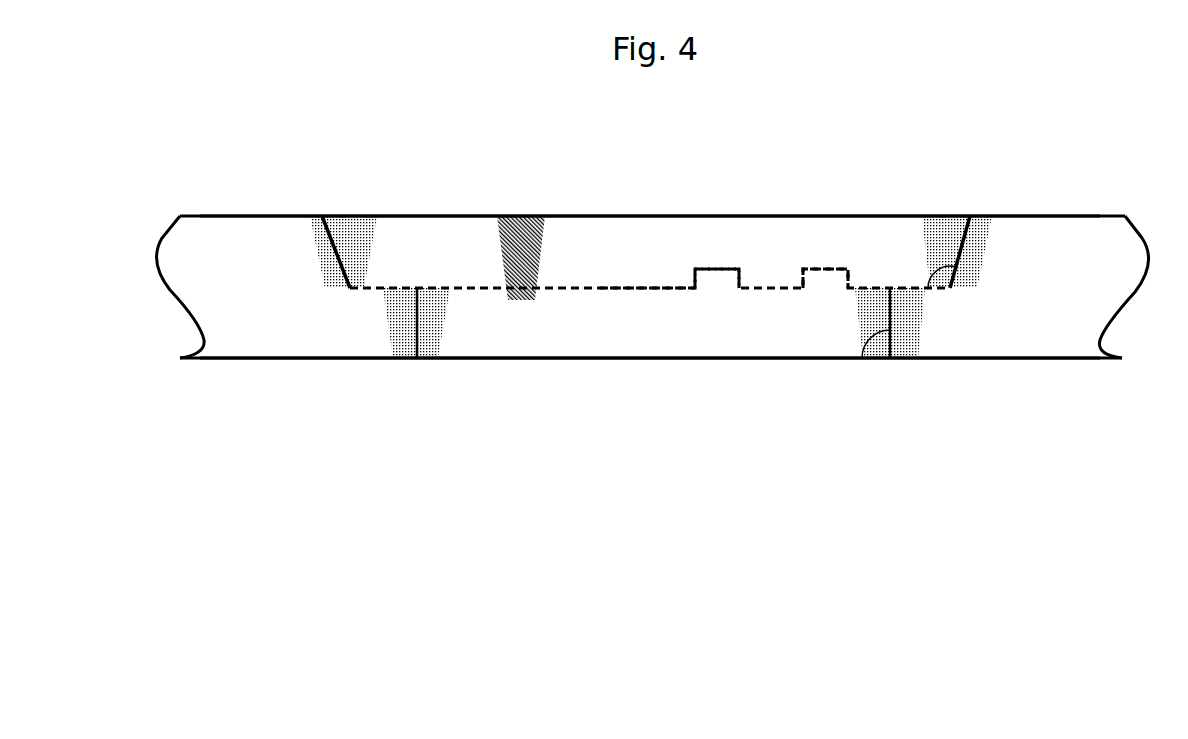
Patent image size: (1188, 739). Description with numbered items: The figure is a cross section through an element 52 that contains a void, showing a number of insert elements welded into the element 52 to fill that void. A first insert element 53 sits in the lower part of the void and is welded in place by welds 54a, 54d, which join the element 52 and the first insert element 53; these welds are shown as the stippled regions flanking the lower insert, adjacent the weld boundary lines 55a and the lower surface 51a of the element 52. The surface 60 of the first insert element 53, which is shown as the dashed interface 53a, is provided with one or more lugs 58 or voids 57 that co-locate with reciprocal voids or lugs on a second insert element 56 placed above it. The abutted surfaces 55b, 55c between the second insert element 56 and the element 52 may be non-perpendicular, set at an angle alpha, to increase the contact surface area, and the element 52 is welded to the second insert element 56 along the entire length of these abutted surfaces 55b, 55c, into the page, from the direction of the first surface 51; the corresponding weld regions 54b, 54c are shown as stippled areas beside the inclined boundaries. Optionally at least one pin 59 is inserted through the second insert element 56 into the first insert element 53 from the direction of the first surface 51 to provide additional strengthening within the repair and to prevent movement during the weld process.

The first surface 51 is at (235, 180).
The bottom surface of sole plate 51a is at (1032, 388).
The element 52 is at (1098, 240).
The first insert element 53 is at (695, 330).
The upper surface of lower layer 53a is at (567, 288).
The weld 54a is at (402, 325).
The upper left stippled insert region 54b is at (357, 230).
The upper right stippled insert region 54c is at (950, 228).
The weld 54d is at (905, 333).
The lower left boundary line 55a is at (423, 325).
The abutted surface 55b is at (322, 216).
The abutted surface 55c is at (970, 216).
The second insert element 56 is at (622, 228).
The void 57 is at (770, 278).
The lug 58 is at (825, 280).
The pin 59 is at (522, 228).
The surface 60 is at (657, 288).